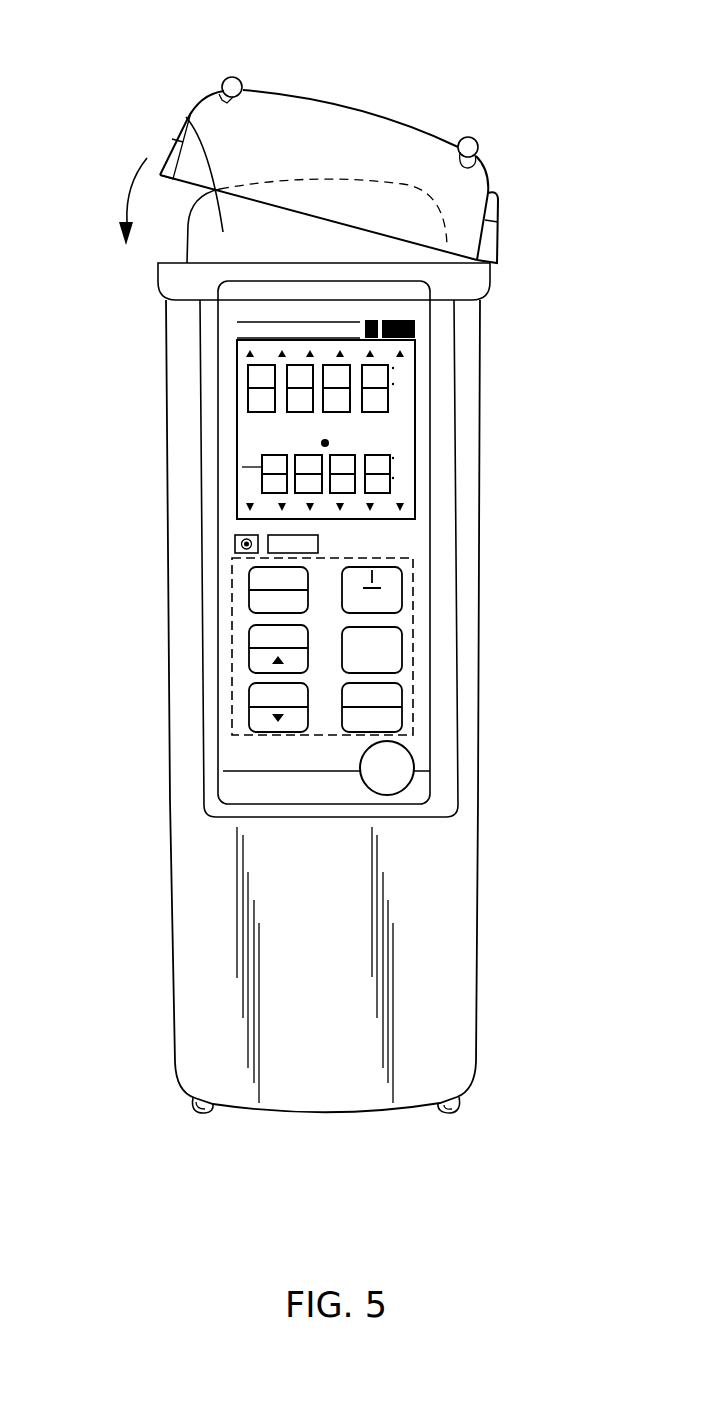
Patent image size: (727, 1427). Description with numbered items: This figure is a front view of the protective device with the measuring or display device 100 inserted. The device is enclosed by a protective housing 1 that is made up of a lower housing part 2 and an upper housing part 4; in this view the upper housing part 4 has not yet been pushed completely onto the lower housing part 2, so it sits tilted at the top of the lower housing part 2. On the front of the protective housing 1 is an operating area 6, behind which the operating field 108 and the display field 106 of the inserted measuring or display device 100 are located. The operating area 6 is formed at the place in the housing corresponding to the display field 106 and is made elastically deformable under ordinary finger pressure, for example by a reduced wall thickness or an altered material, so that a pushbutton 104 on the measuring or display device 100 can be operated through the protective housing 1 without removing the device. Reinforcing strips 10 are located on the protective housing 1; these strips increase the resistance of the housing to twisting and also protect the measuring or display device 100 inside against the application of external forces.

The protective housing 1 is at (262, 1156).
The lower housing part 2 is at (407, 993).
The upper housing part 4 is at (343, 130).
The operating area 6 is at (203, 815).
The reinforcing strips 10 is at (233, 77).
The measuring or display device 100 is at (185, 123).
The pushbutton 104 is at (250, 594).
The display field 106 is at (217, 443).
The operating field 108 is at (232, 652).